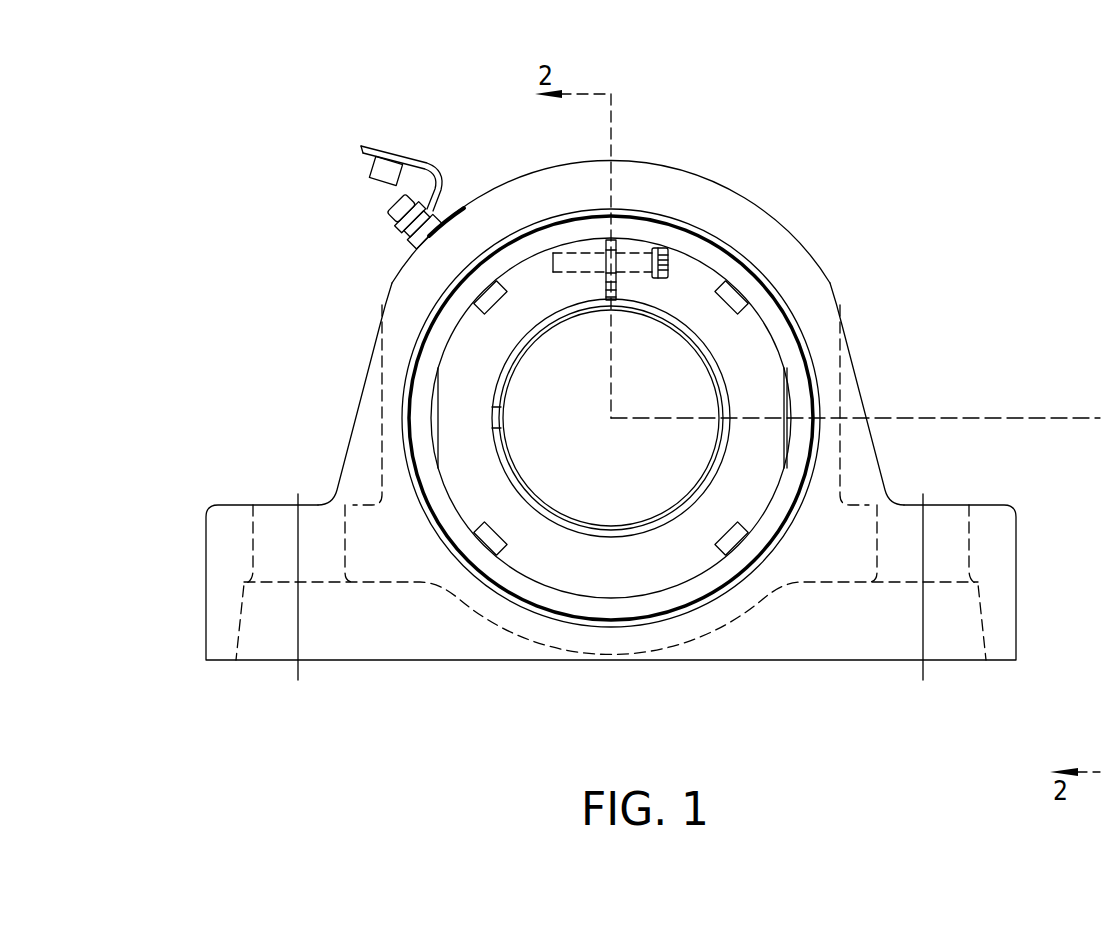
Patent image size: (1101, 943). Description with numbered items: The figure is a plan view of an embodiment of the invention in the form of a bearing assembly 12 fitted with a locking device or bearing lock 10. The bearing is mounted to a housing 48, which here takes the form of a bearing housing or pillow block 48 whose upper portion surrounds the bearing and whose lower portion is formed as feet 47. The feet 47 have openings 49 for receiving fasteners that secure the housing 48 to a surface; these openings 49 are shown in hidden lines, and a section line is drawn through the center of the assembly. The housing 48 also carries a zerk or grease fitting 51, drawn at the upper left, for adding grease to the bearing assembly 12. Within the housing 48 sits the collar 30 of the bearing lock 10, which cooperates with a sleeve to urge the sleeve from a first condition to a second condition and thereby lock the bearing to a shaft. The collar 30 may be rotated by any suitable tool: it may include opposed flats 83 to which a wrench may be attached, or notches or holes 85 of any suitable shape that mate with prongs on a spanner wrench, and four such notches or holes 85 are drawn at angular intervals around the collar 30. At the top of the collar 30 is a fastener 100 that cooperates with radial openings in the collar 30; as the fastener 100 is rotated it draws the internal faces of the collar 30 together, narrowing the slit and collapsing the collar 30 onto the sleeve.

The bearing lock 10 is at (141, 100).
The bearing assembly 12 is at (250, 136).
The collar 30 is at (662, 595).
The feet 47 is at (1010, 512).
The housing 48 is at (355, 400).
The openings 49 is at (958, 417).
The grease fitting 51 is at (400, 220).
The opposed flats 83 is at (787, 393).
The notches or holes 85 is at (490, 540).
The fastener 100 is at (662, 248).